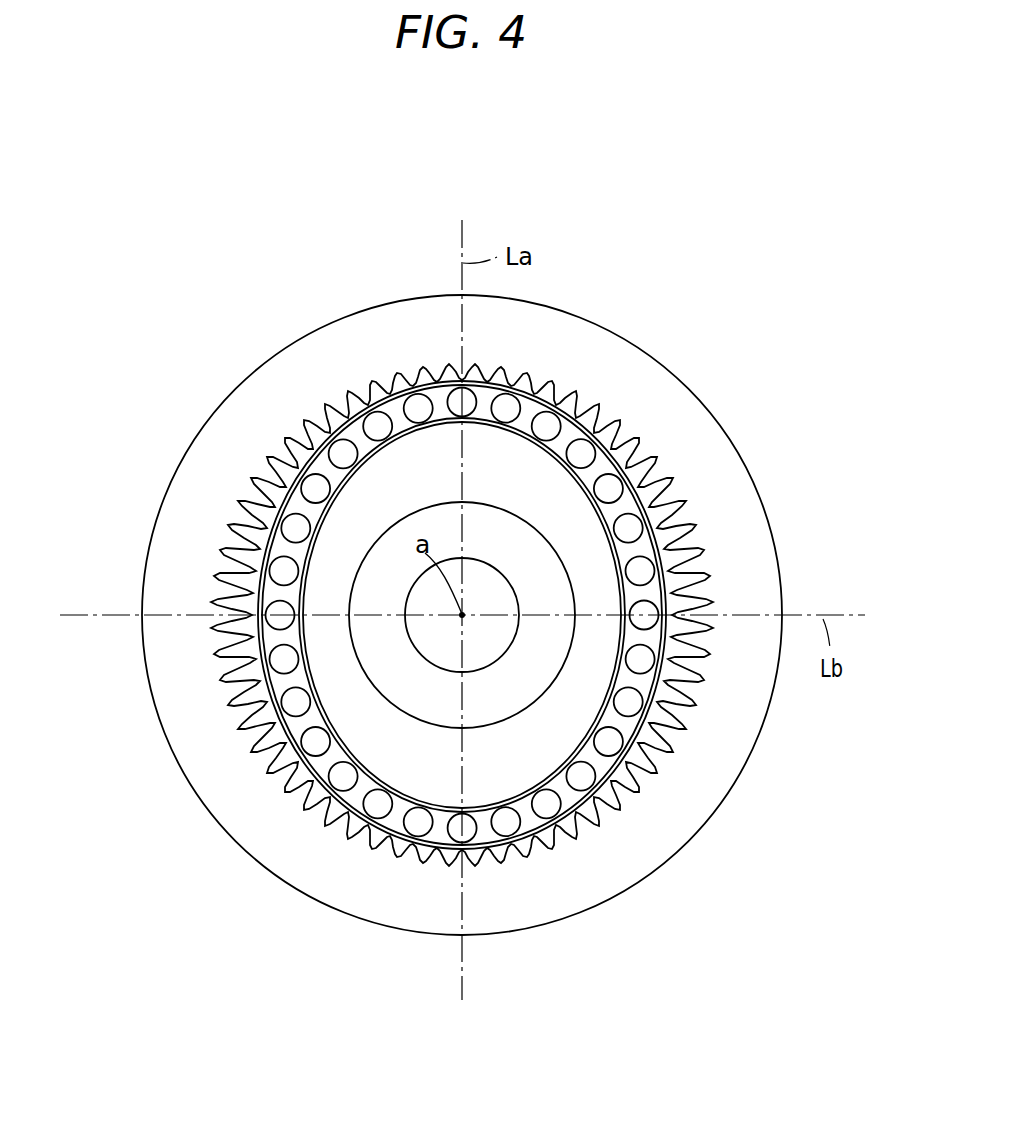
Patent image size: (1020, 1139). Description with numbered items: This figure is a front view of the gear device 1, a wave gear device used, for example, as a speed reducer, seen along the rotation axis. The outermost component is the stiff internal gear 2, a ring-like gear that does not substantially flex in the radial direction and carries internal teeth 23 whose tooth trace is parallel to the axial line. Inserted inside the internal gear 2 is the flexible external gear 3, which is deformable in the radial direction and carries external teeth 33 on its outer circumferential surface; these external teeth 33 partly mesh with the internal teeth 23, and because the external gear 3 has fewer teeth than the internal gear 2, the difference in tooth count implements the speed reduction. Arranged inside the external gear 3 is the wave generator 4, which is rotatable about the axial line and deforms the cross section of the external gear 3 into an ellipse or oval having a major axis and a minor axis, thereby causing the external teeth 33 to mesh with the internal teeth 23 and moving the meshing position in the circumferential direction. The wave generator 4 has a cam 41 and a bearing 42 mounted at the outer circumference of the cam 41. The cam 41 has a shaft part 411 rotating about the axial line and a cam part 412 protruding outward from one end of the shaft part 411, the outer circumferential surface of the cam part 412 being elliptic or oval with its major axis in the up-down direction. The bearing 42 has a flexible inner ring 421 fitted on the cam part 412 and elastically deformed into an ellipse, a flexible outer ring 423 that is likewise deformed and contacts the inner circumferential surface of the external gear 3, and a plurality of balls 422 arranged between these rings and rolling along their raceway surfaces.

The gear device 1 is at (686, 170).
The internal gear 2 is at (653, 352).
The external gear 3 is at (512, 615).
The internal teeth 23 is at (700, 687).
The external teeth 33 is at (673, 722).
The wave generator 4 is at (385, 687).
The cam 41 is at (347, 627).
The shaft part 411 is at (377, 692).
The cam part 412 is at (380, 745).
The bearing 42 is at (477, 687).
The inner ring 421 is at (585, 822).
The balls 422 is at (545, 813).
The outer ring 423 is at (462, 677).